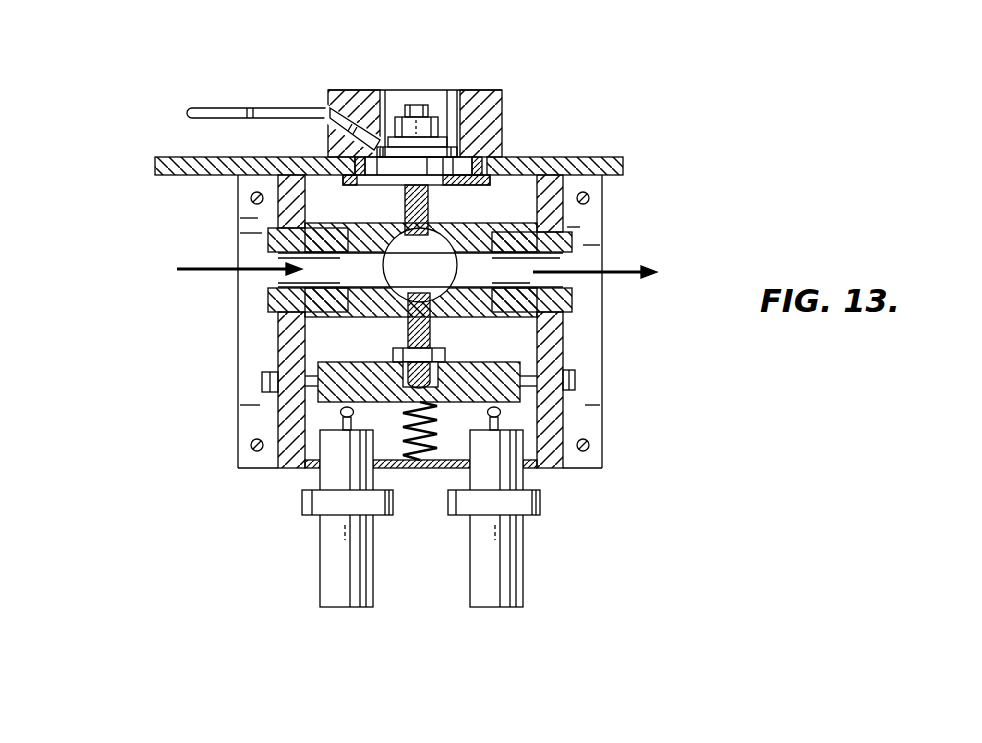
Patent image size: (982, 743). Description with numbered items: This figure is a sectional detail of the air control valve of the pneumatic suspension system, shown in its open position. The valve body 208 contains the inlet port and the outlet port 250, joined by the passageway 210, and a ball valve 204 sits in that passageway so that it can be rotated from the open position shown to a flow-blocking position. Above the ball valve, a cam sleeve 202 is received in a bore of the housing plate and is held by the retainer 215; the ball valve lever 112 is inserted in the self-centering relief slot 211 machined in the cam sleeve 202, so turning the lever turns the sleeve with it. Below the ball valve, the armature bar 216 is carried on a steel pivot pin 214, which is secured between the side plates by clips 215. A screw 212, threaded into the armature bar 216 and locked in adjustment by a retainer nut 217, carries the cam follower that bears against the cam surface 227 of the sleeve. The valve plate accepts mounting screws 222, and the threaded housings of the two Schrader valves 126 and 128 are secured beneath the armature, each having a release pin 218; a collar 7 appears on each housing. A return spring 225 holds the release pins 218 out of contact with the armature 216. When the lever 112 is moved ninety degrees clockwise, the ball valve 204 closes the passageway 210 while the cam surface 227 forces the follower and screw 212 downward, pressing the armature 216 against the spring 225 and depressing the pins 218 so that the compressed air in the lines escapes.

The collar 7 is at (540, 497).
The ball valve lever 112 is at (268, 107).
The Schrader valve 126 is at (322, 544).
The Schrader valve 128 is at (522, 549).
The cam sleeve 202 is at (472, 90).
The ball valve 204 is at (403, 228).
The valve body 208 is at (590, 200).
The passageway 210 is at (355, 283).
The self-centering relief slot 211 is at (332, 118).
The screw 212 is at (380, 372).
The pivot pin 214 is at (263, 385).
The retainer 215 is at (458, 174).
The armature bar 216 is at (325, 410).
The retainer nut 217 is at (444, 350).
The release pins 218 is at (502, 413).
The mounting screws 222 is at (262, 452).
The return spring 225 is at (440, 447).
The cam surface 227 is at (457, 185).
The outlet port 250 is at (617, 277).